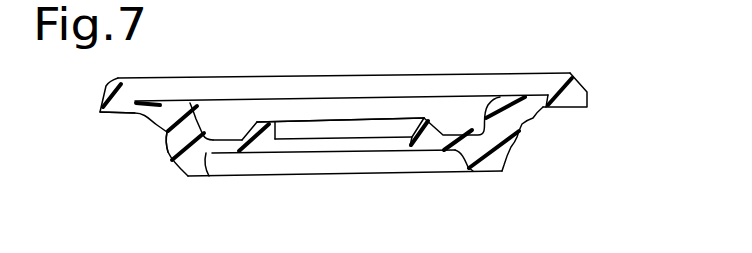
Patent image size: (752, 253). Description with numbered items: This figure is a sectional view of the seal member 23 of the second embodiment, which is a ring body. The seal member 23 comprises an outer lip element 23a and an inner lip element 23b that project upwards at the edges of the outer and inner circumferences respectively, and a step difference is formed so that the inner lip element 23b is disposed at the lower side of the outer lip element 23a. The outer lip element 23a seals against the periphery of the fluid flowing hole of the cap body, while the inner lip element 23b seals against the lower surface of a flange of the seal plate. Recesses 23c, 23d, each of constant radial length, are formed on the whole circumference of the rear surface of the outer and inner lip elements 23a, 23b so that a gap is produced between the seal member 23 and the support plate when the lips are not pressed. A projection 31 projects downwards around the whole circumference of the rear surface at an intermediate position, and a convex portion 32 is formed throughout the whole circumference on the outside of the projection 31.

The seal member 23 is at (588, 48).
The outer lip element 23a is at (572, 72).
The inner lip element 23b is at (425, 113).
The recess 23c is at (141, 119).
The recess 23d is at (265, 154).
The projection 31 is at (206, 154).
The convex portion 32 is at (168, 145).